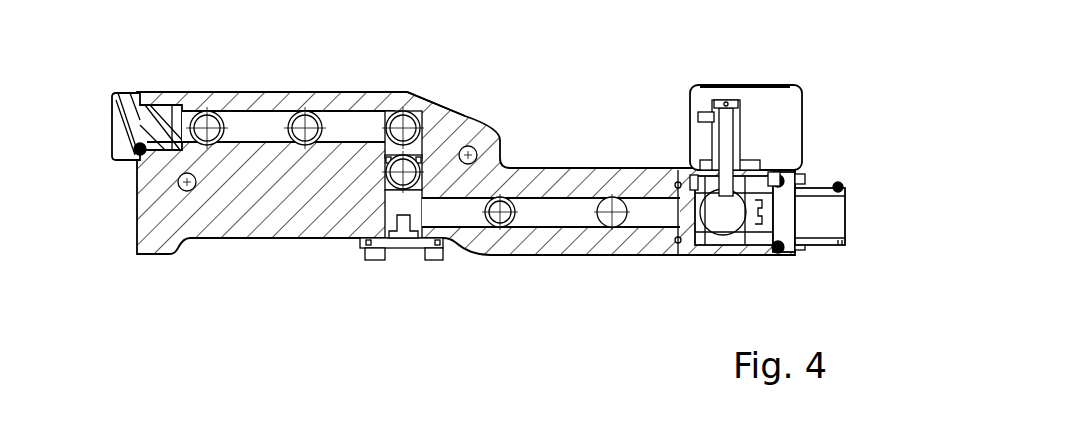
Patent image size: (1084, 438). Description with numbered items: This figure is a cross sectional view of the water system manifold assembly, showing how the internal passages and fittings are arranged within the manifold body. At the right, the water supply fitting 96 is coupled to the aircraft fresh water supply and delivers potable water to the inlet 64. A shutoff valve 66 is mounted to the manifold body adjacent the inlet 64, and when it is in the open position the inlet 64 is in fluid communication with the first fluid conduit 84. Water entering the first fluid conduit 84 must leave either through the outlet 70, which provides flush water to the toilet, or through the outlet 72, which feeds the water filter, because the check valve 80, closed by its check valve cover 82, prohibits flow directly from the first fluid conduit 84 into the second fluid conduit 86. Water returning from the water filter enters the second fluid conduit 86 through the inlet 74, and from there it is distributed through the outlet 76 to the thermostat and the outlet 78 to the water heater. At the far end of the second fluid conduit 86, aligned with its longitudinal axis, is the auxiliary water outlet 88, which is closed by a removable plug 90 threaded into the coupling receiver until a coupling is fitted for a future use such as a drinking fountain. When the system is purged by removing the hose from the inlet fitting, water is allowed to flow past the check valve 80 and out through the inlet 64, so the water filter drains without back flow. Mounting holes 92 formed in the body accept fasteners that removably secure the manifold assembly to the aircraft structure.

The inlet 64 is at (817, 178).
The shutoff valve 66 is at (737, 84).
The outlet 70 is at (618, 227).
The outlet 72 is at (515, 218).
The inlet 74 is at (423, 112).
The outlet 76 is at (305, 110).
The outlet 78 is at (197, 113).
The check valve 80 is at (405, 188).
The check valve cover 82 is at (403, 250).
The first fluid conduit 84 is at (587, 168).
The second fluid conduit 86 is at (373, 92).
The auxiliary water outlet 88 is at (137, 181).
The removable plug 90 is at (110, 120).
The mounting holes 92 is at (192, 190).
The water supply fitting 96 is at (820, 246).